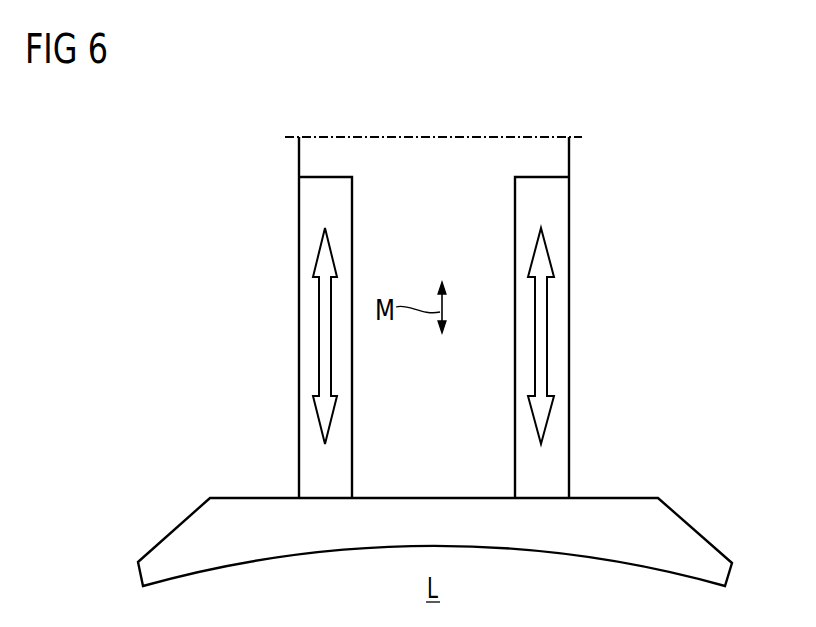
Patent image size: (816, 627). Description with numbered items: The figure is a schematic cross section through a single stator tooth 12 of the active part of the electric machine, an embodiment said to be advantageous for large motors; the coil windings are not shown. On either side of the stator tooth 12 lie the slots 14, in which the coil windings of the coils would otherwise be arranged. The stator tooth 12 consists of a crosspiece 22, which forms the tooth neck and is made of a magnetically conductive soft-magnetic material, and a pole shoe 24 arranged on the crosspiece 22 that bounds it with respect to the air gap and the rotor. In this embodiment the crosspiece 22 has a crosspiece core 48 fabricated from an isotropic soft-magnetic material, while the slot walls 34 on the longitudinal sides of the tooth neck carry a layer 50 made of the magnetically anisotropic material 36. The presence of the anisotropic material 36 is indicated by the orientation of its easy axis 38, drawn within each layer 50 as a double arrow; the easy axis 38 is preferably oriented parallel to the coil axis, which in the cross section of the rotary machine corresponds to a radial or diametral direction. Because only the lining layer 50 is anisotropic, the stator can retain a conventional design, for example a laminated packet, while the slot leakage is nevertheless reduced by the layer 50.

The stator tooth 12 is at (373, 557).
The slot 14 is at (245, 320).
The crosspiece 22 is at (279, 225).
The pole shoe 24 is at (686, 545).
The slot wall 34 is at (298, 257).
The magnetically anisotropic material 36 is at (555, 311).
The easy axis 38 is at (325, 350).
The crosspiece core 48 is at (457, 437).
The layer 50 is at (310, 456).